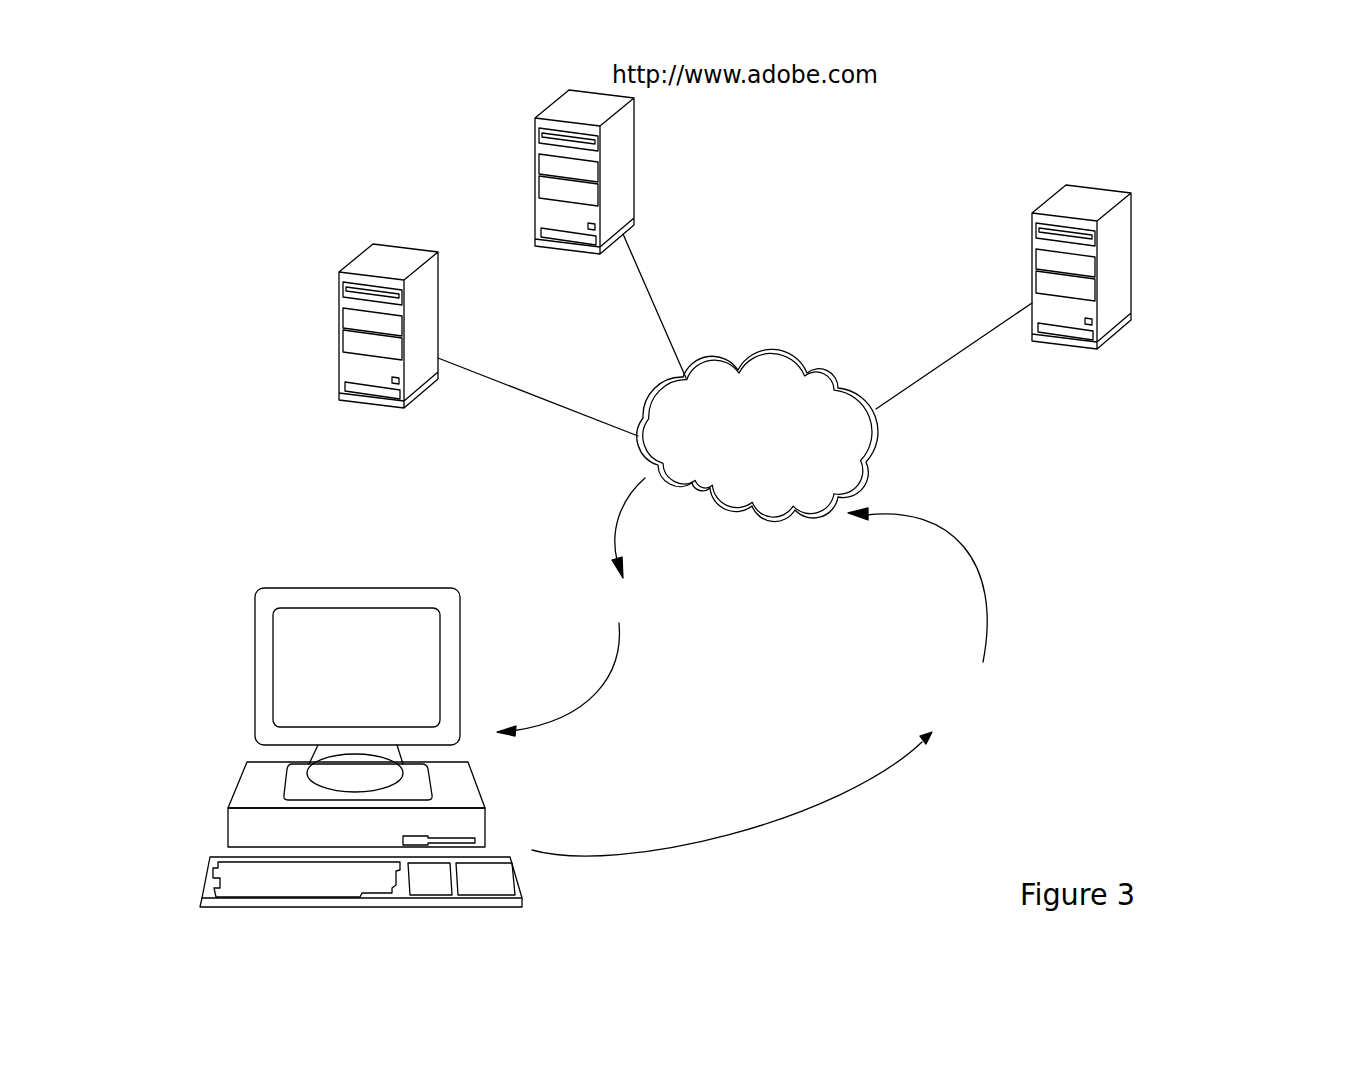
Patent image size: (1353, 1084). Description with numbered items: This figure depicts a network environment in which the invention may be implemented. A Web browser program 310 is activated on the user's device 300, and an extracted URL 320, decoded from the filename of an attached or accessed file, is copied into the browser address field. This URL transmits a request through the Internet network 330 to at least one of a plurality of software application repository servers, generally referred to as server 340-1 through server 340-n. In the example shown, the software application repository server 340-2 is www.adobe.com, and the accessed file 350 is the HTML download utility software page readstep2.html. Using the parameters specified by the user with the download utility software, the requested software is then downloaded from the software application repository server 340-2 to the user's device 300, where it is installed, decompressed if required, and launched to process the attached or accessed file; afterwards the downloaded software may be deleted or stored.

The user's device 300 is at (228, 827).
The Web browser program 310 is at (373, 713).
The extracted URL 320 is at (1131, 713).
The Internet network 330 is at (775, 350).
The software application repository server 340-1 is at (438, 300).
The software application repository server 340-2 is at (535, 150).
The software application repository server 340-n is at (1032, 240).
The accessed file 350 is at (590, 588).